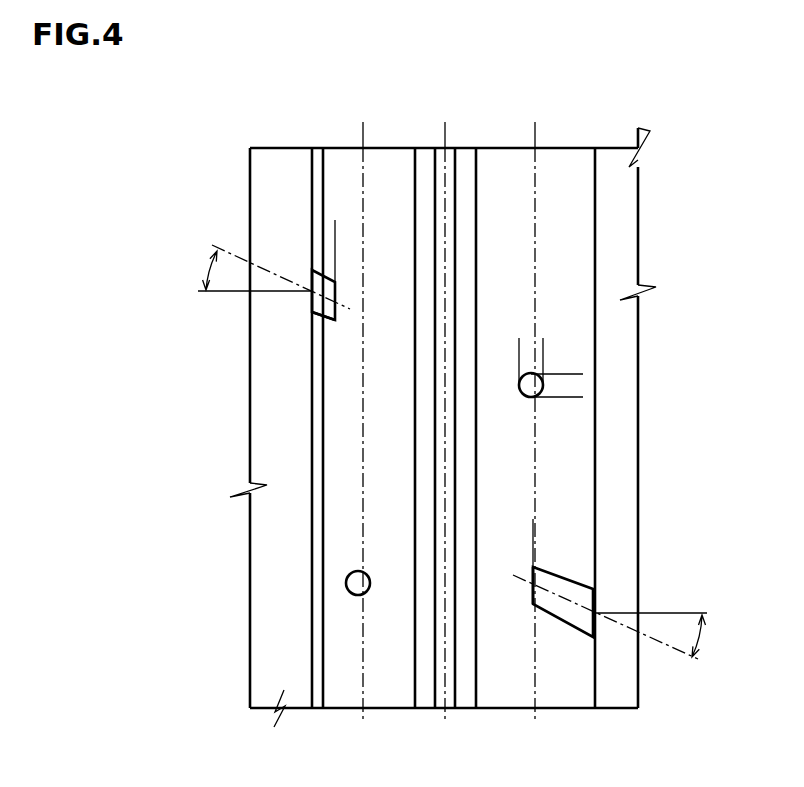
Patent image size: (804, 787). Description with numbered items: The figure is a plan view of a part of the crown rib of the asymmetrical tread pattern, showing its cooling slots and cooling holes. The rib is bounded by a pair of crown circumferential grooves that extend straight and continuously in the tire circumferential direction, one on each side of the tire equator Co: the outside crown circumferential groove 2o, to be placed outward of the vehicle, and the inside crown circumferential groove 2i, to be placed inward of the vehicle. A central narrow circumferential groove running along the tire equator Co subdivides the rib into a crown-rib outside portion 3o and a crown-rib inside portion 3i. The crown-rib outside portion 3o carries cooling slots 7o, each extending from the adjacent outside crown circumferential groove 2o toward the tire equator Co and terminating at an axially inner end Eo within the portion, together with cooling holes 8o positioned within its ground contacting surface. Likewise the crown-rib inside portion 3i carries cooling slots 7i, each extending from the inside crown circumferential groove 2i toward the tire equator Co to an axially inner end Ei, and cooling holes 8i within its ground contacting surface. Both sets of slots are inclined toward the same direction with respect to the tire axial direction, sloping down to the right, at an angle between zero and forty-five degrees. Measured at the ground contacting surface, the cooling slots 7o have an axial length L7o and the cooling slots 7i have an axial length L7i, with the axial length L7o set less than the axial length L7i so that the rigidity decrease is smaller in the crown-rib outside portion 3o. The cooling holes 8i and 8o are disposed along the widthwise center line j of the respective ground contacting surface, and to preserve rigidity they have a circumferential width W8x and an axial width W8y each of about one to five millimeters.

The outside crown circumferential groove 2o is at (282, 191).
The inside crown circumferential groove 2i is at (620, 220).
The crown-rib outside portion 3o is at (403, 125).
The crown-rib inside portion 3i is at (506, 125).
The cooling slot 7o is at (302, 304).
The cooling slot 7i is at (608, 576).
The cooling hole 8o is at (352, 583).
The cooling hole 8i is at (527, 397).
The axially inner end Eo is at (324, 322).
The axially inner end Ei is at (525, 615).
The tire equator Co is at (444, 409).
The widthwise center line j is at (539, 134).
The axial length L7o is at (293, 220).
The axial length L7i is at (500, 519).
The axial width W8y is at (490, 338).
The circumferential width W8x is at (578, 343).